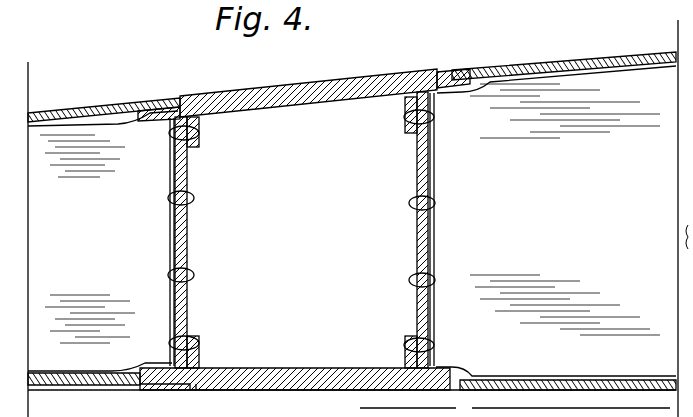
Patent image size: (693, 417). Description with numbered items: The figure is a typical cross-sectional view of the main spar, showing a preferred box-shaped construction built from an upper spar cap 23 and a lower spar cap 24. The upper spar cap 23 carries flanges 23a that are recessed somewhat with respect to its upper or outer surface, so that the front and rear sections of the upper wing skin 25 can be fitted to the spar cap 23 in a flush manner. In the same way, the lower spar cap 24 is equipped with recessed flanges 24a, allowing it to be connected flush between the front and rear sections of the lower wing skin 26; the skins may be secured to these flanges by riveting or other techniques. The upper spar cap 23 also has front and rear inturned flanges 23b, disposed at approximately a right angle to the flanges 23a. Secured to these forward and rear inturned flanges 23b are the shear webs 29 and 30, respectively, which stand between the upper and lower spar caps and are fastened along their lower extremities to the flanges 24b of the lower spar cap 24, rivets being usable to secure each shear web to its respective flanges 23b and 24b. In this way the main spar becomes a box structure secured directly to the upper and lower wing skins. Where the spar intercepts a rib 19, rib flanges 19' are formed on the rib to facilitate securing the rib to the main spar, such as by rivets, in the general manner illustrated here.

The rib 19 is at (350, 213).
The rib flanges 19' is at (380, 221).
The upper spar cap 23 is at (322, 106).
The flanges 23a is at (150, 117).
The inturned flanges 23b is at (200, 133).
The lower spar cap 24 is at (346, 370).
The recessed flanges 24a is at (182, 386).
The flanges 24b is at (200, 345).
The upper wing skin 25 is at (86, 106).
The lower wing skin 26 is at (64, 382).
The shear web 29 is at (188, 213).
The shear web 30 is at (418, 244).